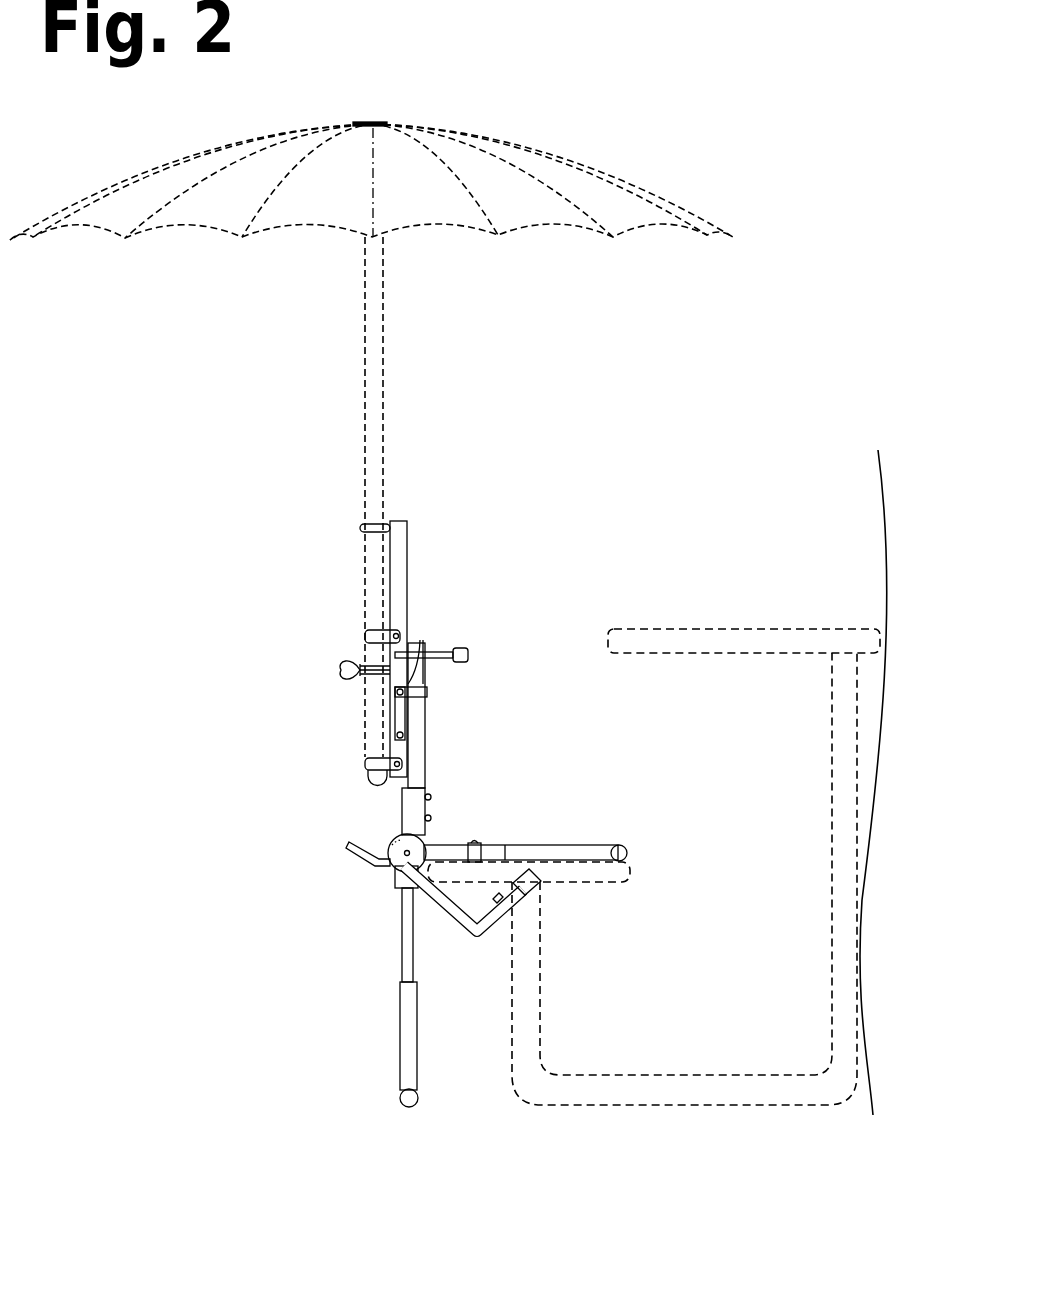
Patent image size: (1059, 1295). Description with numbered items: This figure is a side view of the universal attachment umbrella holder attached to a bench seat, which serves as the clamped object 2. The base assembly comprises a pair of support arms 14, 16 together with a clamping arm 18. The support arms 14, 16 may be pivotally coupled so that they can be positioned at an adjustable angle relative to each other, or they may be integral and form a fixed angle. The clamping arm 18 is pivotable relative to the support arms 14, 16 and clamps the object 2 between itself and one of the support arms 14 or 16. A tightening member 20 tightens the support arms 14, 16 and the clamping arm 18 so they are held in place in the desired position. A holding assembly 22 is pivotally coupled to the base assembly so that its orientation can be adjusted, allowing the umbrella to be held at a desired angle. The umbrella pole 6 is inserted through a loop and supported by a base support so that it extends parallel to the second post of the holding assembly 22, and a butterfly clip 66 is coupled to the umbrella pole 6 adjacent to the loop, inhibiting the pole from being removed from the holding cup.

The object 2 is at (588, 875).
The umbrella pole 6 is at (373, 362).
The support arm 14 is at (528, 848).
The support arm 16 is at (402, 1027).
The clamping arm 18 is at (458, 935).
The tightening member 20 is at (350, 845).
The holding assembly 22 is at (486, 701).
The butterfly clip 66 is at (340, 665).